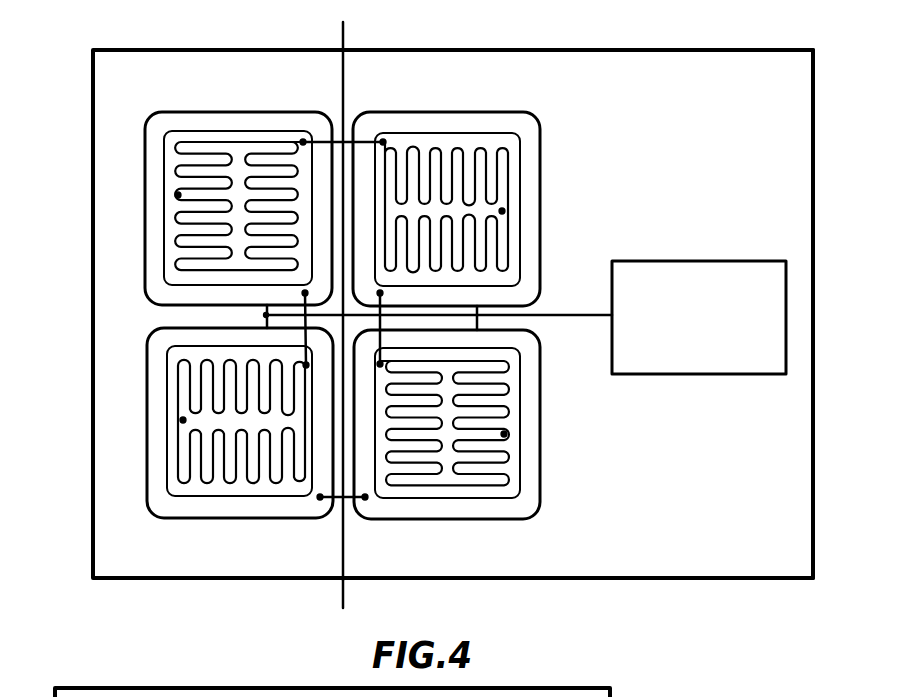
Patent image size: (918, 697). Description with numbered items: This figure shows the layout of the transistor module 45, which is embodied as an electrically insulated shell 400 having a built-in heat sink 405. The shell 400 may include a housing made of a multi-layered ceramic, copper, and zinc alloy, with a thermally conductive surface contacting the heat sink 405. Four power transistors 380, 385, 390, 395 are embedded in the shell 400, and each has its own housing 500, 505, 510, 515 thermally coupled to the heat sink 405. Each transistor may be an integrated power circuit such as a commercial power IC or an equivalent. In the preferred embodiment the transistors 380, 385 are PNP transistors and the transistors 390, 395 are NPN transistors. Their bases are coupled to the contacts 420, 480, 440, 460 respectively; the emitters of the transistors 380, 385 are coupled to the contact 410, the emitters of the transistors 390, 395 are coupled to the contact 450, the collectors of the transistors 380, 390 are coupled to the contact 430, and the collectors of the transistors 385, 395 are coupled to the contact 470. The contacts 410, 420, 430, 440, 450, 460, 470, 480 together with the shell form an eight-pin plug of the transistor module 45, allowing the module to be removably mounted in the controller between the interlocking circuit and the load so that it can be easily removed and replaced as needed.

The transistor module 45 is at (820, 253).
The electrically insulated shell 400 is at (826, 400).
The transistor 380 is at (543, 205).
The transistor 385 is at (142, 188).
The transistor 390 is at (543, 488).
The transistor 395 is at (142, 396).
The housing 500 is at (543, 252).
The housing 505 is at (142, 247).
The housing 510 is at (545, 445).
The housing 515 is at (142, 450).
The contact 420 is at (502, 211).
The contact 480 is at (178, 195).
The contact 460 is at (183, 420).
The contact 440 is at (504, 434).
The contact 410 is at (340, 43).
The contact 450 is at (343, 590).
The heat sink 405 is at (715, 261).
The contact 470 is at (306, 338).
The contact 430 is at (380, 338).